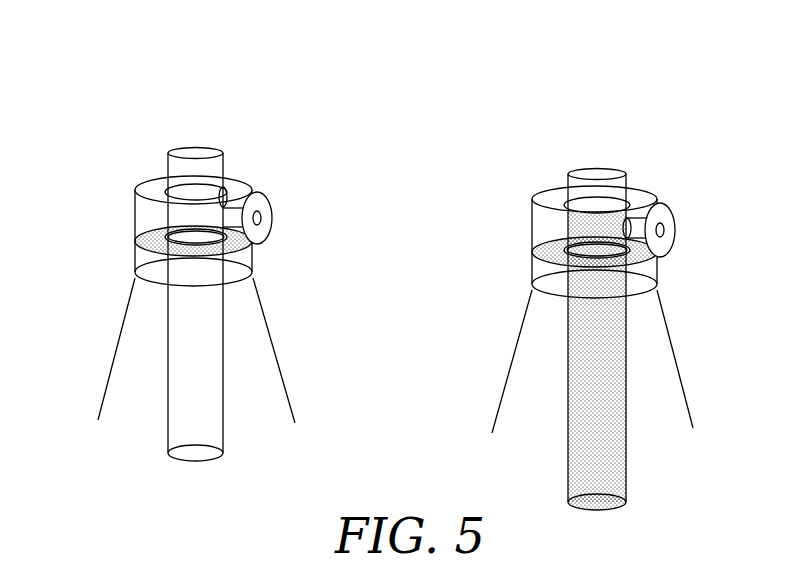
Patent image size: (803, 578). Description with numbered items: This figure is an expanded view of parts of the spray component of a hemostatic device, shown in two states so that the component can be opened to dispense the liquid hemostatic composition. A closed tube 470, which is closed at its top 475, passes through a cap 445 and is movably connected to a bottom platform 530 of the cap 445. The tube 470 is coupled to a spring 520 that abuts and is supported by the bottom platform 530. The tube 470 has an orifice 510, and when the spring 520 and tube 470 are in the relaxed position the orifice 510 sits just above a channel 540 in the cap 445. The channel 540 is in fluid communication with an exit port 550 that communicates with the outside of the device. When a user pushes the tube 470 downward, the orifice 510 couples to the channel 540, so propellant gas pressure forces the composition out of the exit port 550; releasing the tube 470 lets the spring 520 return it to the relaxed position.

The cap 445 is at (154, 164).
The tube 470 is at (228, 396).
The top 475 is at (193, 134).
The orifice 510 is at (234, 196).
The spring 520 is at (238, 248).
The bottom platform 530 is at (211, 258).
The channel 540 is at (218, 217).
The exit port 550 is at (271, 203).